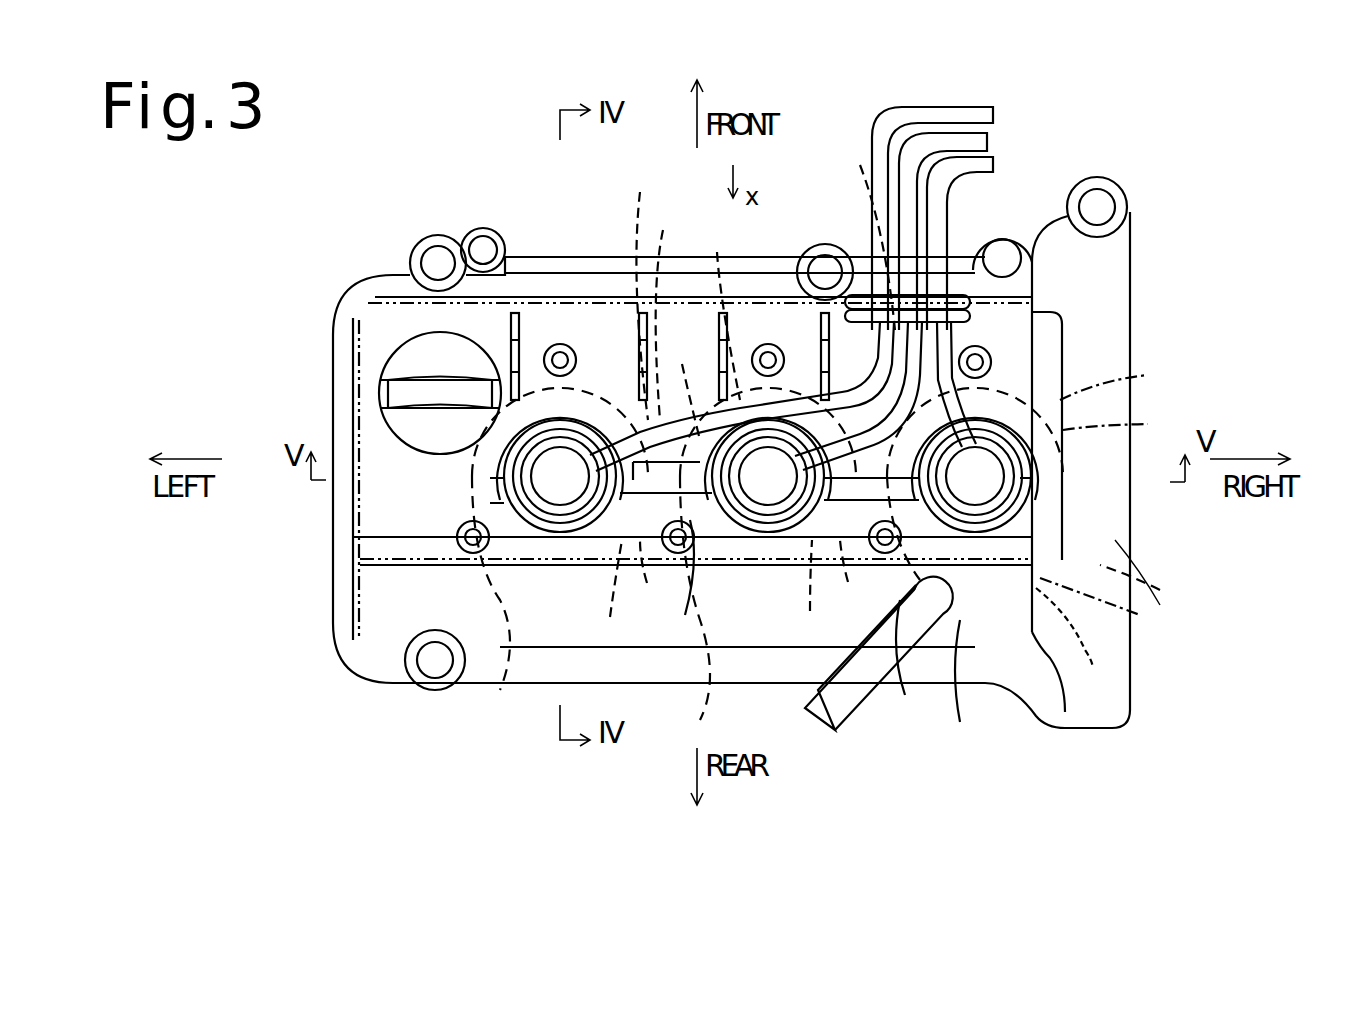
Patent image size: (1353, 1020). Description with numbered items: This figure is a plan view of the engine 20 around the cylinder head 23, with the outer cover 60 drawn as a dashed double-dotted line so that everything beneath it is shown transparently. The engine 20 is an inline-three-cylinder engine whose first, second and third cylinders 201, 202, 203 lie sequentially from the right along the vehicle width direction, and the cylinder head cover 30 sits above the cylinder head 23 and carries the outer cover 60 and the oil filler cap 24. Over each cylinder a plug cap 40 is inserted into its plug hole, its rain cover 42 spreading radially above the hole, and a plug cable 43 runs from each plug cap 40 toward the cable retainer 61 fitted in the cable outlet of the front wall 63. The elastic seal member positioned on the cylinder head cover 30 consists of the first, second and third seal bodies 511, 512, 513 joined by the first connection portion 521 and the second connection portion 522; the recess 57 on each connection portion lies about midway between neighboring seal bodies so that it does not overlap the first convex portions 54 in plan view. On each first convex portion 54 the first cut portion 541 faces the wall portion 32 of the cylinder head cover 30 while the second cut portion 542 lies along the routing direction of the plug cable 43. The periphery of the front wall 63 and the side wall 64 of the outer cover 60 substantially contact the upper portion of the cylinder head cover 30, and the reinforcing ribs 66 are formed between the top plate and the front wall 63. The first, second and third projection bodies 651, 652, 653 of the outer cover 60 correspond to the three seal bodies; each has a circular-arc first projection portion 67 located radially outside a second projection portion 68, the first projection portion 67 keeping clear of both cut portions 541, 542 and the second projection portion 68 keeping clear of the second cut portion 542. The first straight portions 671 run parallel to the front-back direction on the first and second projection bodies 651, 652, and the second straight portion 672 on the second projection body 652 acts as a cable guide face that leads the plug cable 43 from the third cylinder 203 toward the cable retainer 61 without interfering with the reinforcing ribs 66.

The engine 20 is at (306, 648).
The cylinder head 23 is at (498, 232).
The oil filler cap 24 is at (385, 380).
The cylinder head cover 30 is at (1132, 318).
The wall portion 32 is at (358, 548).
The plug cap 40 is at (522, 540).
The rain cover 42 is at (510, 445).
The plug cable 43 is at (878, 122).
The first convex portion 54 is at (522, 400).
The recess 57 is at (771, 275).
The outer cover 60 is at (360, 312).
The cable retainer 61 is at (980, 240).
The front wall 63 is at (398, 305).
The side wall 64 is at (358, 516).
The reinforcing ribs 66 is at (647, 288).
The first projection portion 67 is at (913, 578).
The second projection portion 68 is at (891, 598).
The first cylinder 201 is at (1058, 640).
The second cylinder 202 is at (790, 716).
The third cylinder 203 is at (492, 560).
The first seal body 511 is at (1040, 400).
The second seal body 512 is at (742, 292).
The third seal body 513 is at (486, 510).
The first connection portion 521 is at (898, 295).
The second connection portion 522 is at (640, 298).
The first cut portion 541 is at (555, 525).
The second cut portion 542 is at (620, 435).
The first projection body 651 is at (1130, 378).
The second projection body 652 is at (685, 384).
The third projection body 653 is at (412, 566).
The first straight portions 671 is at (825, 639).
The second straight portion 672 is at (722, 308).